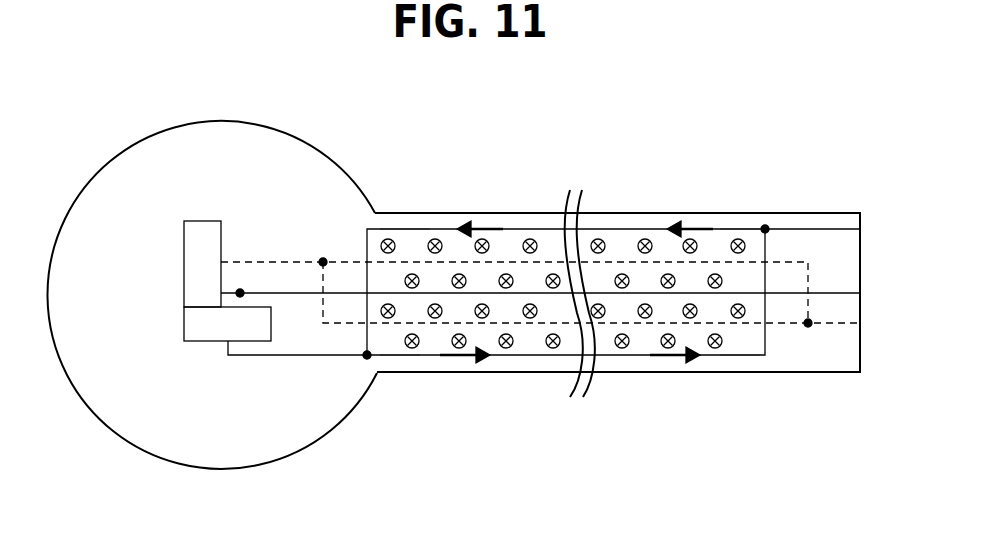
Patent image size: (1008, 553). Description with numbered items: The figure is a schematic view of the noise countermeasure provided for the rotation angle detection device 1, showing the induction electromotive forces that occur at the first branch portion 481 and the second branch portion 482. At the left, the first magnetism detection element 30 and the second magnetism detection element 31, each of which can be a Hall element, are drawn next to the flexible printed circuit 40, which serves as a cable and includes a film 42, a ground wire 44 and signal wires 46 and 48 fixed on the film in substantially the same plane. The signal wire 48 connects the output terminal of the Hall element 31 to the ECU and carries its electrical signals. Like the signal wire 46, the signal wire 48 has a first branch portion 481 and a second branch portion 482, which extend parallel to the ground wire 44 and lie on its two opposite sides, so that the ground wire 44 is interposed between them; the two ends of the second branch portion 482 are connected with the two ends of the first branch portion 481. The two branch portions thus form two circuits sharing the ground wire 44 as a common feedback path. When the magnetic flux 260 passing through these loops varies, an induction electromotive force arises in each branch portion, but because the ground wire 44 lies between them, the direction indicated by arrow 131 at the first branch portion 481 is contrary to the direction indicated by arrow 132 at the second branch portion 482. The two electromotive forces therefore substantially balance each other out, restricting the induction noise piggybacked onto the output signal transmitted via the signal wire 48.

The rotation angle detection device 1 is at (828, 90).
The first magnetism detection element 30 is at (205, 237).
The second magnetism detection element 31 is at (200, 333).
The flexible printed circuit 40 is at (120, 151).
The film 42 is at (147, 432).
The ground wire 44 is at (258, 290).
The signal wire 46 is at (305, 262).
The signal wire 48 is at (268, 356).
The arrow 131 is at (465, 355).
The arrow 132 is at (486, 229).
The magnetic flux 260 is at (435, 239).
The first branch portion 481 is at (398, 355).
The second branch portion 482 is at (401, 229).